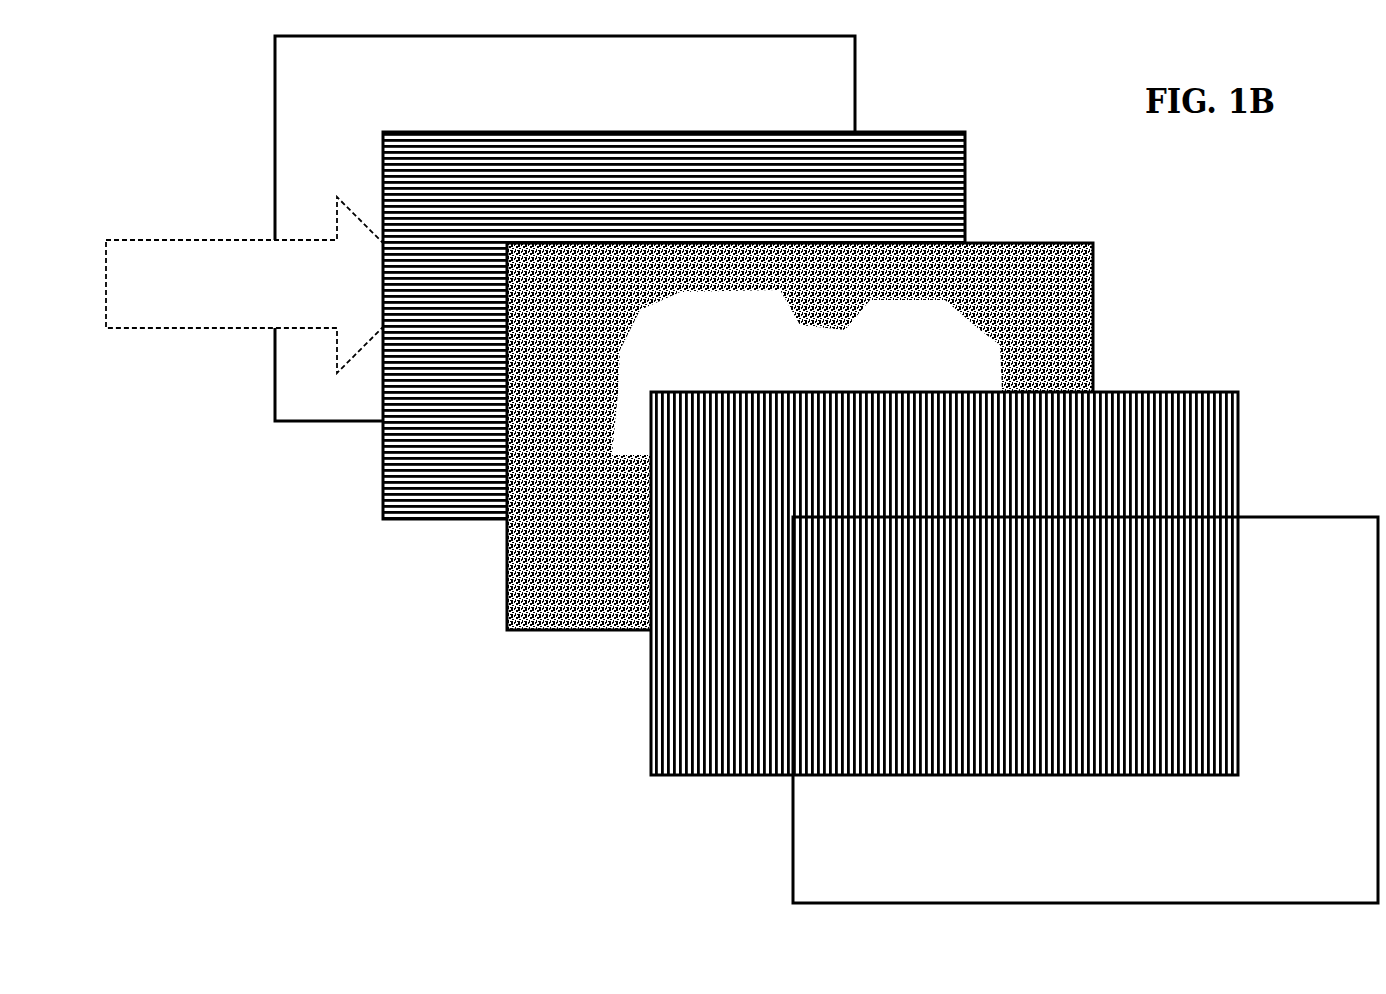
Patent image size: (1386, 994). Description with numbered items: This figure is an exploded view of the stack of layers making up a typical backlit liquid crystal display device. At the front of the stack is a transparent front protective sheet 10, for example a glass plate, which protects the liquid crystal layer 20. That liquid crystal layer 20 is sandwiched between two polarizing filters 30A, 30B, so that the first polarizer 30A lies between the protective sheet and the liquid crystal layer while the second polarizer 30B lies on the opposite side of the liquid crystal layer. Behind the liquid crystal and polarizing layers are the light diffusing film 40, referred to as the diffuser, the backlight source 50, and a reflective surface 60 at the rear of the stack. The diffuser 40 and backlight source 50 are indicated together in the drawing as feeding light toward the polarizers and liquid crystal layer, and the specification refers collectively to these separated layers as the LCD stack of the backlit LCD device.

The transparent front protective sheet 10 is at (793, 855).
The liquid crystal layer 20 is at (507, 598).
The polarizing filter 30A is at (651, 727).
The polarizing filter 30B is at (383, 487).
The light diffusing film 40 is at (265, 285).
The backlight source 50 is at (265, 285).
The reflective surface 60 is at (276, 405).